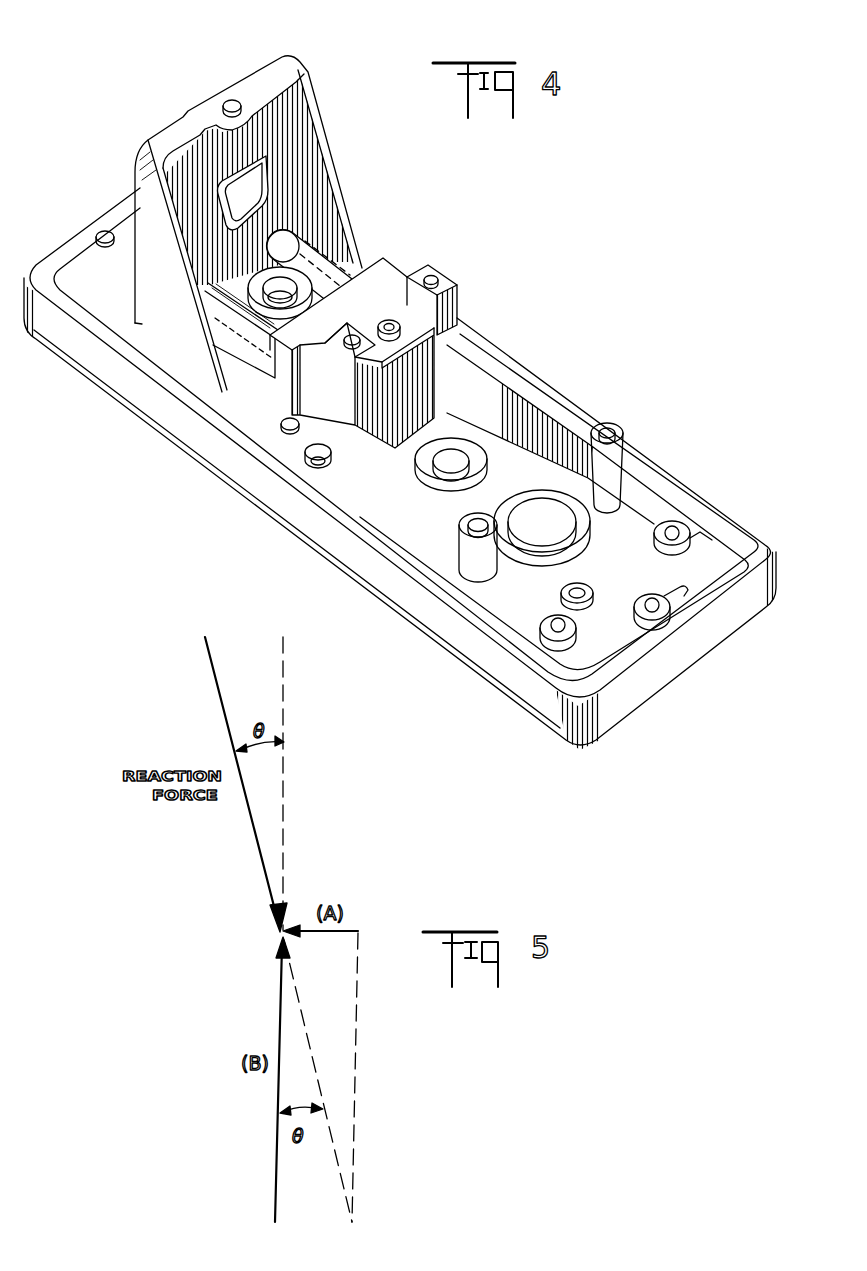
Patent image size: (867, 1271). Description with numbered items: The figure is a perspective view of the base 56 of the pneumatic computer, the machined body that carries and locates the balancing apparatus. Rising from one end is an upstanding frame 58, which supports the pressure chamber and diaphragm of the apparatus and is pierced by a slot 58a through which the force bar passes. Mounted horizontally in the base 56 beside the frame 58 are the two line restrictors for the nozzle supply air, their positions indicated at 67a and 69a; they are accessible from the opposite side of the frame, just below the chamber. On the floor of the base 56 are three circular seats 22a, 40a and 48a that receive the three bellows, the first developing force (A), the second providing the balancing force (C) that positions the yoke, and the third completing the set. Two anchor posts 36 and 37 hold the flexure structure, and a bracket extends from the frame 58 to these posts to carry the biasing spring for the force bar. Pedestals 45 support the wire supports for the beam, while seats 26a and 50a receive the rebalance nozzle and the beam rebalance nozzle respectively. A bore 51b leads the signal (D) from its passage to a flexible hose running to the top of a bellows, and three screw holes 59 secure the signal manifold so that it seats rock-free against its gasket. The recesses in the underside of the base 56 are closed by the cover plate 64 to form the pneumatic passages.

The base 56 is at (592, 283).
The cover plate 64 is at (157, 424).
The upstanding frame 58 is at (234, 92).
The slot 58a is at (230, 198).
The restrictor position 69a is at (303, 247).
The circular seat 22a is at (268, 278).
The restrictor position 67a is at (228, 318).
The anchor post 36 is at (338, 333).
The seat 26a is at (389, 322).
The anchor post 37 is at (431, 277).
The screw holes 59 is at (100, 243).
The bore 51b is at (320, 446).
The pedestals 45 is at (606, 428).
The circular seat 48a is at (487, 464).
The circular seat 40a is at (590, 524).
The seat 50a is at (583, 591).